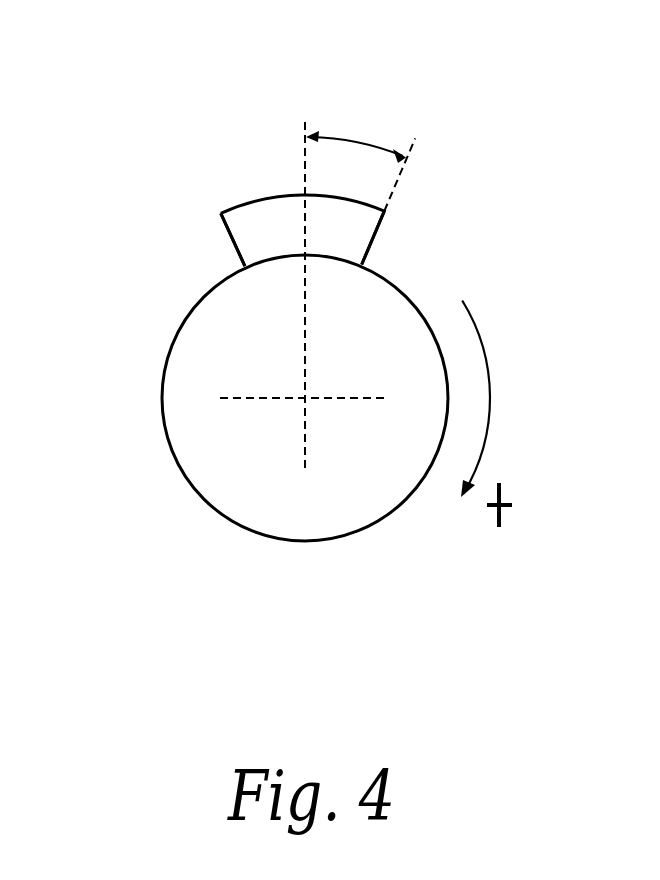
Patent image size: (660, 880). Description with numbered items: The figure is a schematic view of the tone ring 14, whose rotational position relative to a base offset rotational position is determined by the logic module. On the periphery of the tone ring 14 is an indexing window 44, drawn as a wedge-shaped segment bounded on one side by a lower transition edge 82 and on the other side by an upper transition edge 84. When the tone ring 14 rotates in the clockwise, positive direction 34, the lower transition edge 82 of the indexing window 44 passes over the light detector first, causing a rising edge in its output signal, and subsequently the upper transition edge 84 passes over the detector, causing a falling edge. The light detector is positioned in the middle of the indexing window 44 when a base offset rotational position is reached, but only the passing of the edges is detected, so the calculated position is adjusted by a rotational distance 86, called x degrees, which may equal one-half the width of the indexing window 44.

The tone ring 14 is at (188, 460).
The indexing window 44 is at (262, 213).
The upper transition edge 84 is at (230, 238).
The lower transition edge 82 is at (375, 238).
The rotational distance 86 is at (357, 135).
The clockwise direction 34 is at (493, 378).